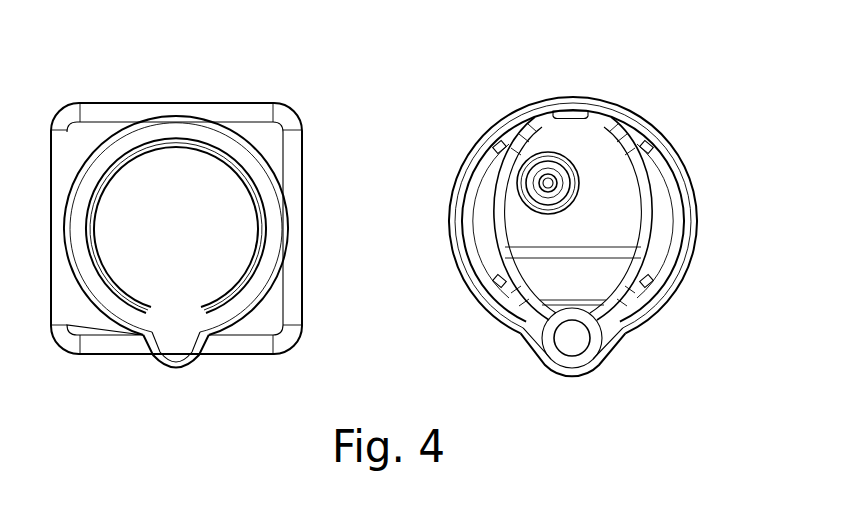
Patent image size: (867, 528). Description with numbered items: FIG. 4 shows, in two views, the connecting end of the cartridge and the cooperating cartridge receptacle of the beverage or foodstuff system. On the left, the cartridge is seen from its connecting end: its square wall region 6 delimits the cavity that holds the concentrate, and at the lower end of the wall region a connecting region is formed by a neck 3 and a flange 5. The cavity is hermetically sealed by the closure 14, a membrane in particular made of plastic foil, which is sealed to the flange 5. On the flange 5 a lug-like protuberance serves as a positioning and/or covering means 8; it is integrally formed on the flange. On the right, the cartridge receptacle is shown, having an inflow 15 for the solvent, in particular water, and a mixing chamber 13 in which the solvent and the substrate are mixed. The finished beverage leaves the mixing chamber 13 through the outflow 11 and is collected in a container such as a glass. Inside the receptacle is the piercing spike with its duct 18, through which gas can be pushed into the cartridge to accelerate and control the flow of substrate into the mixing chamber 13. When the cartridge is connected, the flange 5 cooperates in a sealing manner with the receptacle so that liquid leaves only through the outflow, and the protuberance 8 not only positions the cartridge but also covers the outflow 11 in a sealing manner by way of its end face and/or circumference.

The neck 3 is at (128, 155).
The flange 5 is at (177, 130).
The wall region 6 is at (273, 135).
The positioning and/or covering means 8 is at (172, 360).
The closure 14 is at (181, 272).
The outflow 11 is at (572, 342).
The mixing chamber 13 is at (619, 198).
The inflow 15 is at (582, 89).
The duct 18 is at (548, 182).